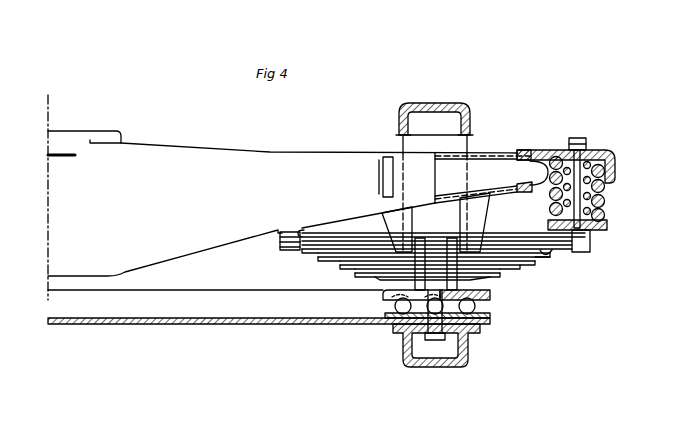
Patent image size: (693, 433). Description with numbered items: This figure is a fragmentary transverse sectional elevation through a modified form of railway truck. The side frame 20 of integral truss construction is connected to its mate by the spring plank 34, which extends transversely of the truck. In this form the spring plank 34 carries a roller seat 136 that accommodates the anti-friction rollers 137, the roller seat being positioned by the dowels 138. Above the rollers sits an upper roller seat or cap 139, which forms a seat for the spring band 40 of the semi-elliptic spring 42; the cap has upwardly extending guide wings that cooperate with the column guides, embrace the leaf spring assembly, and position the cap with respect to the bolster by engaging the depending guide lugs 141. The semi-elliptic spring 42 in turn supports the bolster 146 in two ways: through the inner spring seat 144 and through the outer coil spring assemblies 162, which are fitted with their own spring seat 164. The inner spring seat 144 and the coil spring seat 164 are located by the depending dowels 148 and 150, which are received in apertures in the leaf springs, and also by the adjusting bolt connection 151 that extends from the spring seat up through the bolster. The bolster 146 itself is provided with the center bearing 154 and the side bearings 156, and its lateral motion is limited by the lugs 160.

The side frame 20 is at (437, 102).
The spring plank 34 is at (218, 318).
The spring band 40 is at (340, 274).
The semi-elliptic spring 42 is at (546, 257).
The roller seat 136 is at (491, 318).
The anti-friction rollers 137 is at (476, 304).
The dowels 138 is at (420, 338).
The upper roller seat or cap 139 is at (474, 283).
The depending guide lugs 141 is at (385, 228).
The inner spring seat 144 is at (278, 237).
The bolster 146 is at (160, 150).
The depending dowel 148 is at (293, 251).
The depending dowel 150 is at (588, 250).
The adjusting bolt connection 151 is at (577, 138).
The center bearing 154 is at (93, 130).
The side bearings 156 is at (303, 150).
The lugs 160 is at (383, 178).
The outer coil spring assemblies 162 is at (605, 197).
The spring seat 164 is at (606, 223).